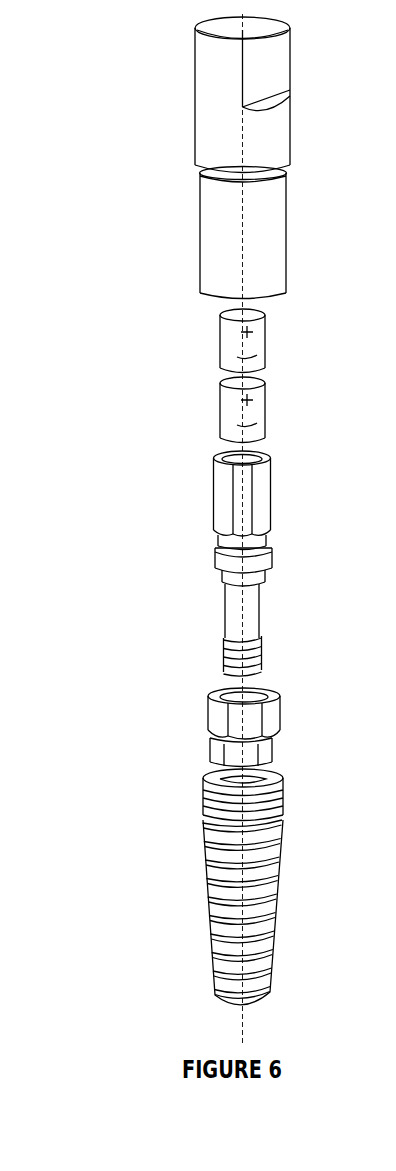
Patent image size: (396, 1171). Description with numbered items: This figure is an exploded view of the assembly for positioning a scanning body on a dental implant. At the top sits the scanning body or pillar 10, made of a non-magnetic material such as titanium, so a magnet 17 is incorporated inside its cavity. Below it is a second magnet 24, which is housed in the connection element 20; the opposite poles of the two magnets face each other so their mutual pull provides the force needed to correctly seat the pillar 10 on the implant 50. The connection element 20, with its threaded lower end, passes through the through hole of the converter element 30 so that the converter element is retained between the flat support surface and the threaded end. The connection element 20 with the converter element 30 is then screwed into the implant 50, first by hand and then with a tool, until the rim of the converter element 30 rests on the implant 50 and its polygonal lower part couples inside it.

The scanning pillar 10 is at (210, 92).
The magnet 17 is at (222, 336).
The magnet 24 is at (218, 403).
The connection element 20 is at (218, 530).
The converter element 30 is at (210, 710).
The implant 50 is at (205, 820).